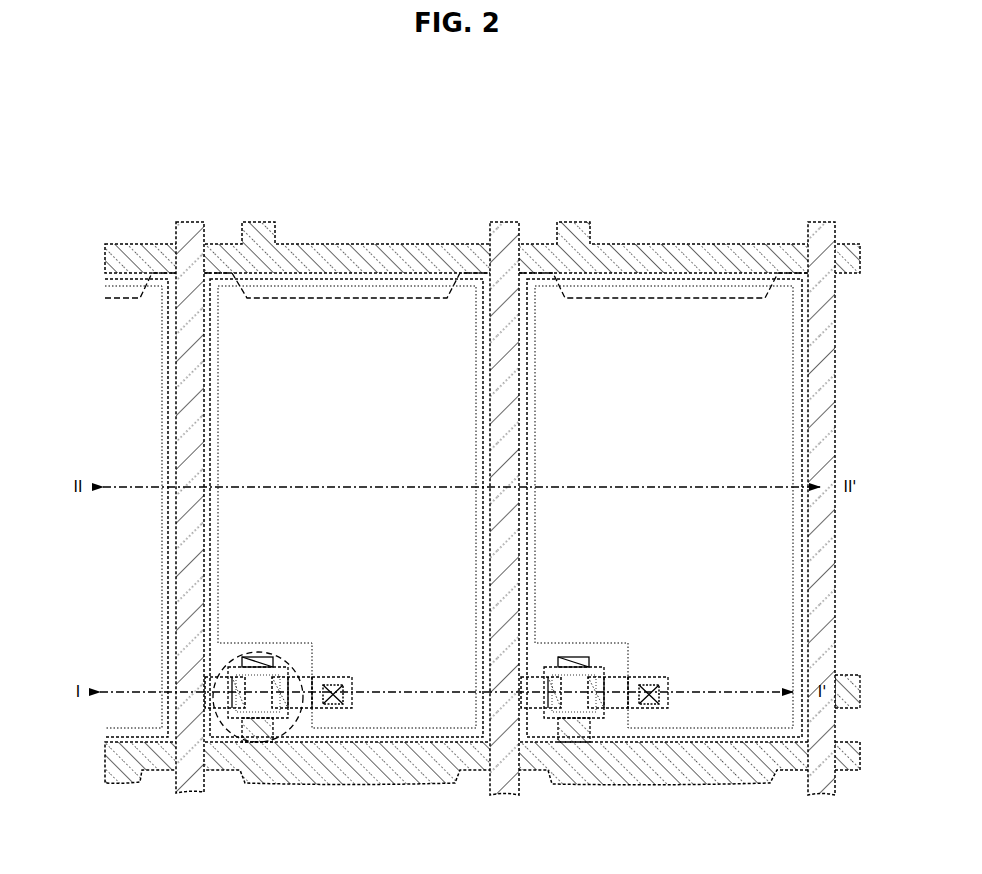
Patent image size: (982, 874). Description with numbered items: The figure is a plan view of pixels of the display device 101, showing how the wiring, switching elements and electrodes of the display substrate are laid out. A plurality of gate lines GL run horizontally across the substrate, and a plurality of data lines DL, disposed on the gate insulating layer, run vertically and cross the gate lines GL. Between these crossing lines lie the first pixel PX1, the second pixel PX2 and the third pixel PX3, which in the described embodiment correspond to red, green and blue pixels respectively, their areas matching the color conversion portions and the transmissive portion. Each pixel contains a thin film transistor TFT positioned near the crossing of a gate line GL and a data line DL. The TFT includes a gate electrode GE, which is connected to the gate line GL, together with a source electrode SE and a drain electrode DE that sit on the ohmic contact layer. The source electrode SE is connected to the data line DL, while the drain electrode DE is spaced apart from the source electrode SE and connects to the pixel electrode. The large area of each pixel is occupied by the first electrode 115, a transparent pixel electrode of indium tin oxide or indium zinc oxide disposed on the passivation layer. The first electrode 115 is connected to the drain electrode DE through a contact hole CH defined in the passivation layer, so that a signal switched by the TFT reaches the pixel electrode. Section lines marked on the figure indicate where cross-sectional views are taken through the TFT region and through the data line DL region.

The display device 101 is at (146, 174).
The data line DL is at (188, 222).
The gate line GL is at (216, 258).
The first pixel PX1 is at (343, 279).
The second pixel PX2 is at (678, 279).
The third pixel PX3 is at (140, 279).
The gate electrode GE is at (258, 657).
The source electrode SE is at (232, 738).
The drain electrode DE is at (282, 738).
The thin film transistor TFT is at (205, 735).
The contact hole CH is at (333, 706).
The first electrode 115 is at (390, 712).